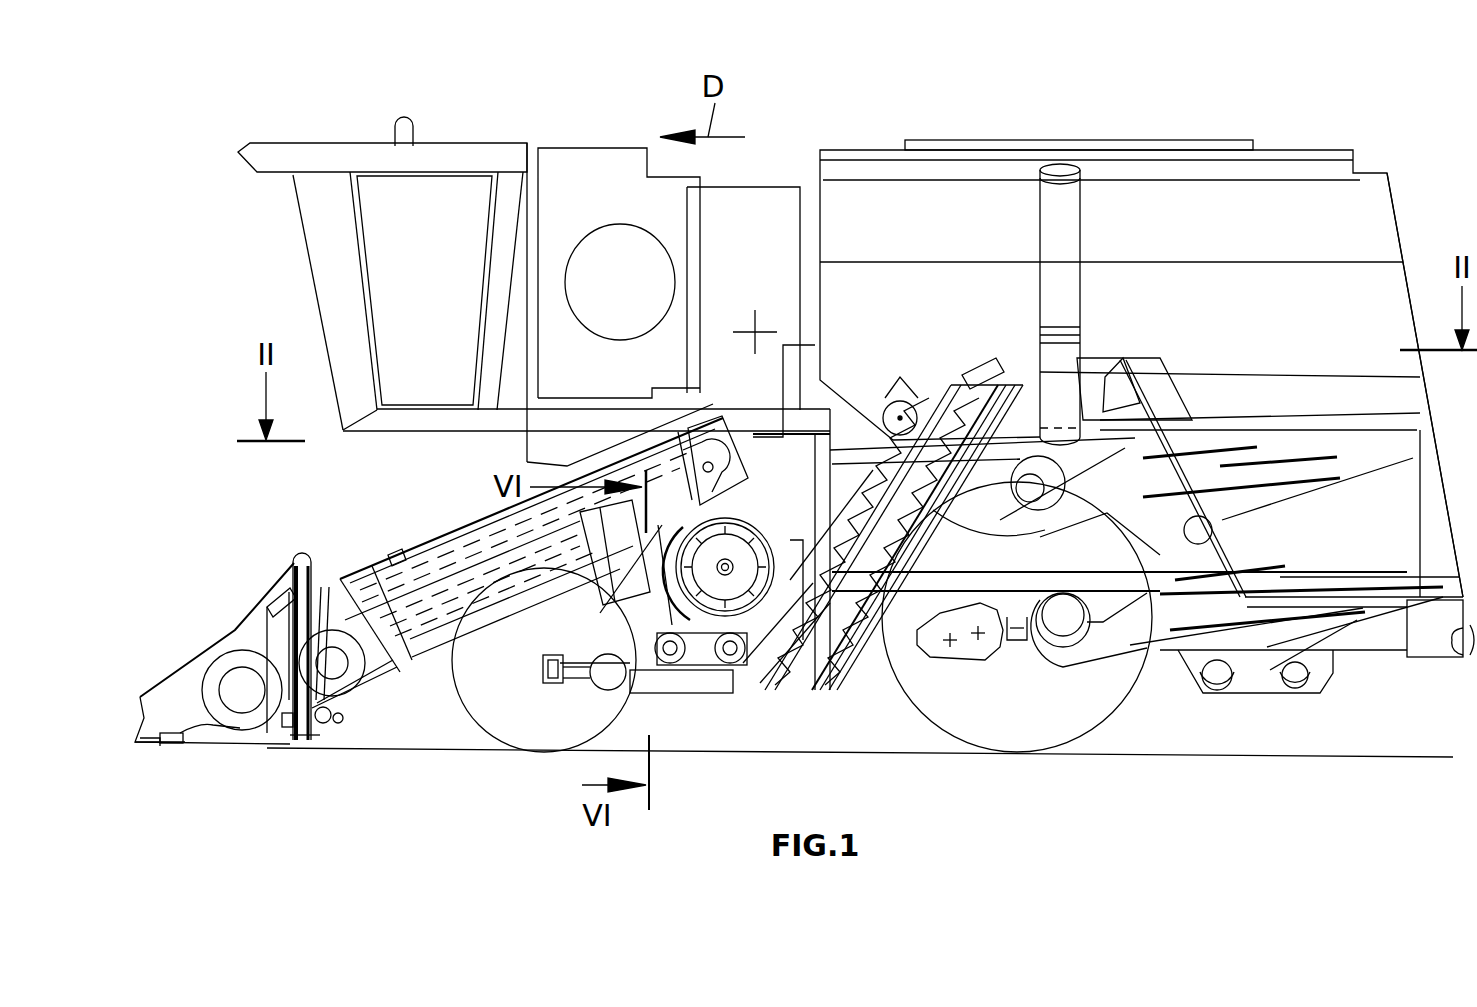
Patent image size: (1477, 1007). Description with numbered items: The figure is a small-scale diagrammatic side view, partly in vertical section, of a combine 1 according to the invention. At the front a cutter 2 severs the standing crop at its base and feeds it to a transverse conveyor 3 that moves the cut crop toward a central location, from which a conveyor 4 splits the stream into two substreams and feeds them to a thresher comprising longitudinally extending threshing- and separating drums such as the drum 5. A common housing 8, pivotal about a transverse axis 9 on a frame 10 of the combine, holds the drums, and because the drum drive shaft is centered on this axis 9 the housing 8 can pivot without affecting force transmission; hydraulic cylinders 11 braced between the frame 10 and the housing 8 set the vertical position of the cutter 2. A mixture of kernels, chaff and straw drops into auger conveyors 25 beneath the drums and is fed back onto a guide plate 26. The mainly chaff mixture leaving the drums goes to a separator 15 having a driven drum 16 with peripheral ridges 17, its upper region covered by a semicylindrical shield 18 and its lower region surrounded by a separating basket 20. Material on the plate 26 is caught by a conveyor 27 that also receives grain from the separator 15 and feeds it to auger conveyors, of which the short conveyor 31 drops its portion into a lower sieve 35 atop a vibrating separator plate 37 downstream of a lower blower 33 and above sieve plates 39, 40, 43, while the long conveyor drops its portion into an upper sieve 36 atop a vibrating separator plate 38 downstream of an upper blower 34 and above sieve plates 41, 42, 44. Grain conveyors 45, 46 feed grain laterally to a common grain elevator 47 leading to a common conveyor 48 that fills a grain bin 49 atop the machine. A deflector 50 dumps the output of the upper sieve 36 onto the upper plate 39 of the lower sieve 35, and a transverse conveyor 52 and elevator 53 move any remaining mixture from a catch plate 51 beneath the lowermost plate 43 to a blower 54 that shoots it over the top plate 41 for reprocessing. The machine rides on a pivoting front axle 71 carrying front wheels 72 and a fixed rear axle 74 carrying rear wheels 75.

The combine 1 is at (753, 188).
The cutter 2 is at (157, 743).
The transverse conveyor 3 is at (248, 723).
The conveyor 4 is at (352, 682).
The threshing- and separating drum 5 is at (423, 552).
The common housing 8 is at (432, 542).
The transverse axis 9 is at (732, 465).
The frame 10 is at (693, 677).
The hydraulic cylinder 11 is at (578, 637).
The separator 15 is at (730, 583).
The driven drum 16 is at (737, 527).
The peripheral ridges 17 is at (740, 520).
The semicylindrical shield 18 is at (803, 540).
The separating basket 20 is at (748, 660).
The auger conveyor 25 is at (482, 648).
The guide plate 26 is at (642, 650).
The conveyor 27 is at (672, 660).
The auger conveyor 31 is at (807, 657).
The lower blower 33 is at (1063, 633).
The upper blower 34 is at (1037, 490).
The lower sieve 35 is at (1235, 630).
The upper sieve 36 is at (1263, 467).
The vibrating separator plate 37 is at (935, 568).
The vibrating separator plate 38 is at (1023, 435).
The upper plate 39 is at (1230, 590).
The sieve plate 40 is at (1322, 593).
The top plate 41 is at (1186, 490).
The sieve plate 42 is at (1278, 460).
The lowermost sieve plate 43 is at (1338, 647).
The sieve plate 44 is at (1310, 490).
The grain conveyor 45 is at (1213, 677).
The grain conveyor 46 is at (1213, 490).
The grain elevator 47 is at (1188, 633).
The common conveyor 48 is at (1050, 268).
The grain bin 49 is at (865, 220).
The deflector 50 is at (1368, 490).
The catch plate 51 is at (1377, 643).
The transverse conveyor 52 is at (1298, 690).
The elevator 53 is at (1158, 393).
The blower 54 is at (1115, 370).
The pivoting front axle 71 is at (552, 687).
The front wheel 72 is at (472, 728).
The fixed rear axle 74 is at (1015, 633).
The rear wheel 75 is at (918, 723).